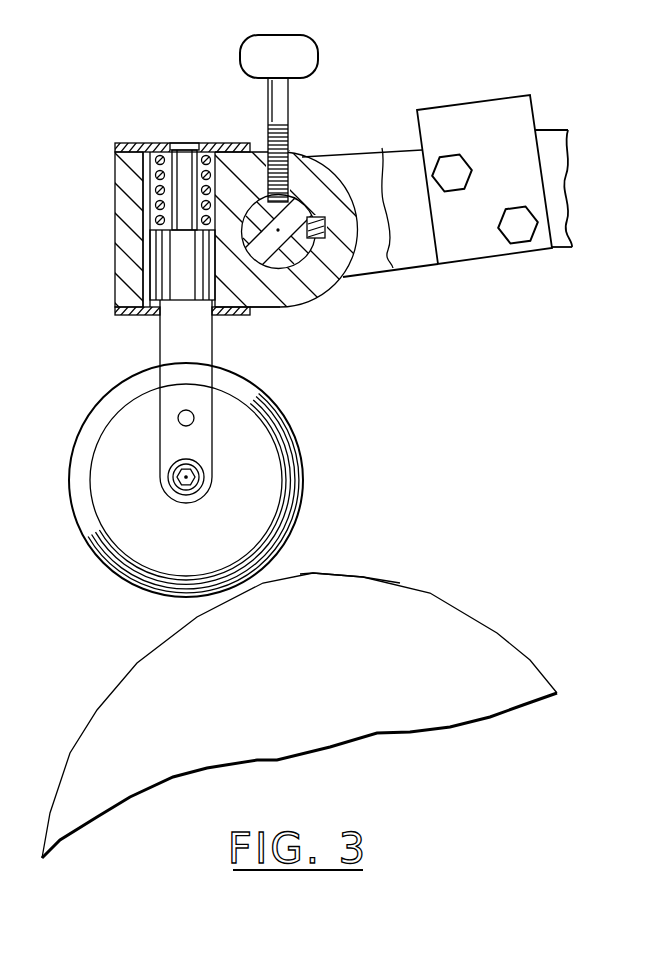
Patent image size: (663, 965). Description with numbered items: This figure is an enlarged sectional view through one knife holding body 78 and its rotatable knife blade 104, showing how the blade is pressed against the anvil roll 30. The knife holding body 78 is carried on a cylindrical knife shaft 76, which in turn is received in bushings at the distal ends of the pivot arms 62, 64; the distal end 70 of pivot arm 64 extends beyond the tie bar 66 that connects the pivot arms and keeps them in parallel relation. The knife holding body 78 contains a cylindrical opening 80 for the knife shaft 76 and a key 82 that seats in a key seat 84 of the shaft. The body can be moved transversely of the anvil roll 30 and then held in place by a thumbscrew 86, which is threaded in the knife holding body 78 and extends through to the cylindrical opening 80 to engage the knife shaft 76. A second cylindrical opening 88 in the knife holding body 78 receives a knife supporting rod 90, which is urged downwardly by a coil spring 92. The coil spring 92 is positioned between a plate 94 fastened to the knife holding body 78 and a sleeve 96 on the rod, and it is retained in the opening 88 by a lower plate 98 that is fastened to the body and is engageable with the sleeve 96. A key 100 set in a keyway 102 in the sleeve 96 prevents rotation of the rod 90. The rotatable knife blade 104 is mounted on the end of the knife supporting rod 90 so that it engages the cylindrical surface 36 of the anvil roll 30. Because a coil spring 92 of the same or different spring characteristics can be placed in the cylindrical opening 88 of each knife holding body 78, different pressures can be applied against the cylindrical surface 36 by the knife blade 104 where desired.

The anvil roll 30 is at (432, 615).
The cylindrical surface 36 is at (352, 572).
The pivot arm 62 is at (553, 140).
The pivot arm 64 is at (355, 175).
The tie bar 66 is at (494, 110).
The distal end 70 is at (360, 265).
The knife shaft 76 is at (320, 255).
The knife holding body 78 is at (272, 308).
The cylindrical opening 80 is at (298, 198).
The key 82 is at (326, 232).
The key seat 84 is at (383, 165).
The thumbscrew 86 is at (305, 52).
The cylindrical opening 88 is at (143, 215).
The knife supporting rod 90 is at (170, 333).
The coil spring 92 is at (143, 183).
The plate 94 is at (130, 148).
The sleeve 96 is at (165, 263).
The lower plate 98 is at (120, 318).
The key 100 is at (146, 275).
The keyway 102 is at (150, 231).
The rotatable knife blade 104 is at (250, 385).